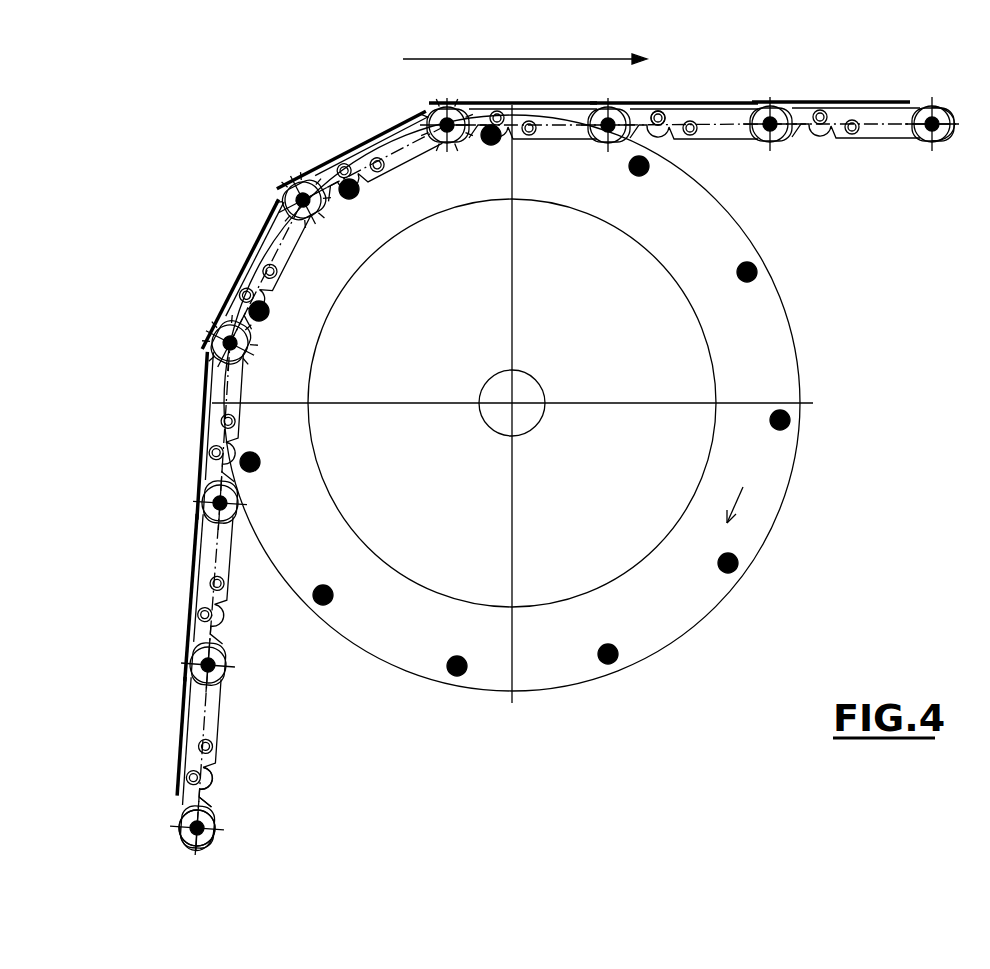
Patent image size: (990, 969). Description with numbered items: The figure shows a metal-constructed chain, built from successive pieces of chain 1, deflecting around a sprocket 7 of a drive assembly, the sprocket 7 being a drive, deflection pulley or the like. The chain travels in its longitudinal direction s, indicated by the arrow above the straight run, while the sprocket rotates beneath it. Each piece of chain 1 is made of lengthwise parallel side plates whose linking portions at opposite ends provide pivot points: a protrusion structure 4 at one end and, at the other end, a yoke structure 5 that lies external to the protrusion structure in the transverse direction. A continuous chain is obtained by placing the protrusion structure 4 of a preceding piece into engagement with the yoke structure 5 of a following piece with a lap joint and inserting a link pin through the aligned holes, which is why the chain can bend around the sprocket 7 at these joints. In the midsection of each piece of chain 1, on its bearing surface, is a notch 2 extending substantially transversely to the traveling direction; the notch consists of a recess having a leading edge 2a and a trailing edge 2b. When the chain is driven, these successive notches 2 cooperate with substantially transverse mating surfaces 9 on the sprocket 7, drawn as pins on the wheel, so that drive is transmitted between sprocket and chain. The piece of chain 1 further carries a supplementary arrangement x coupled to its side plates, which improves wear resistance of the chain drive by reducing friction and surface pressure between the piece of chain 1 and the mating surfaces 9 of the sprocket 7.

The piece of chain 1 is at (207, 312).
The notch 2 is at (236, 639).
The leading edge 2a is at (230, 784).
The trailing edge 2b is at (232, 814).
The protrusion structure 4 is at (161, 843).
The yoke structure 5 is at (247, 676).
The sprocket 7 is at (813, 335).
The mating surfaces 9 is at (776, 257).
The longitudinal direction s is at (544, 45).
The supplementary arrangement x is at (694, 102).